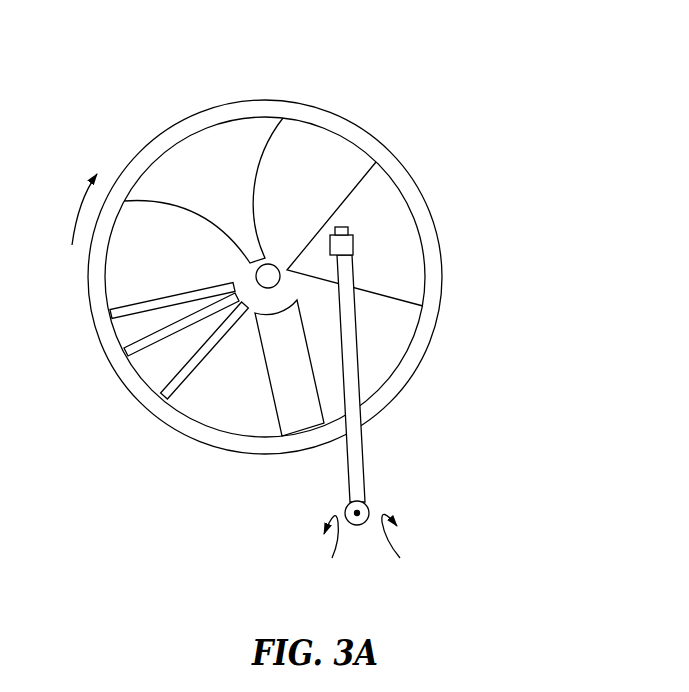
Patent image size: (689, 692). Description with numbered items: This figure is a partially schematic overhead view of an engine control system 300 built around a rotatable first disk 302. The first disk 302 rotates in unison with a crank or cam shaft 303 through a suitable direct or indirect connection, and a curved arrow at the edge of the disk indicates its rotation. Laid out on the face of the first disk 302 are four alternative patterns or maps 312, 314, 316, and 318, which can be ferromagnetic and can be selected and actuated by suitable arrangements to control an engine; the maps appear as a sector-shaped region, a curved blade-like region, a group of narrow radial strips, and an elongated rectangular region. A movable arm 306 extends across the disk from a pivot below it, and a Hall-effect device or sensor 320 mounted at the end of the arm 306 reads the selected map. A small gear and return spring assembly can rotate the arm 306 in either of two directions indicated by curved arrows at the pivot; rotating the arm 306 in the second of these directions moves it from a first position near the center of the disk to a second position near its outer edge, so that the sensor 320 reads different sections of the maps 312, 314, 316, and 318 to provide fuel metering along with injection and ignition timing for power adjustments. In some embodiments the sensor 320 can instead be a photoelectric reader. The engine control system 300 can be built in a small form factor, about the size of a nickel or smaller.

The engine control system 300 is at (484, 111).
The first disk 302 is at (332, 121).
The cam shaft 303 is at (279, 265).
The movable arm 306 is at (363, 465).
The map 312 is at (424, 221).
The map 314 is at (196, 132).
The map 316 is at (143, 375).
The map 318 is at (305, 439).
The Hall-effect sensor 320 is at (353, 247).